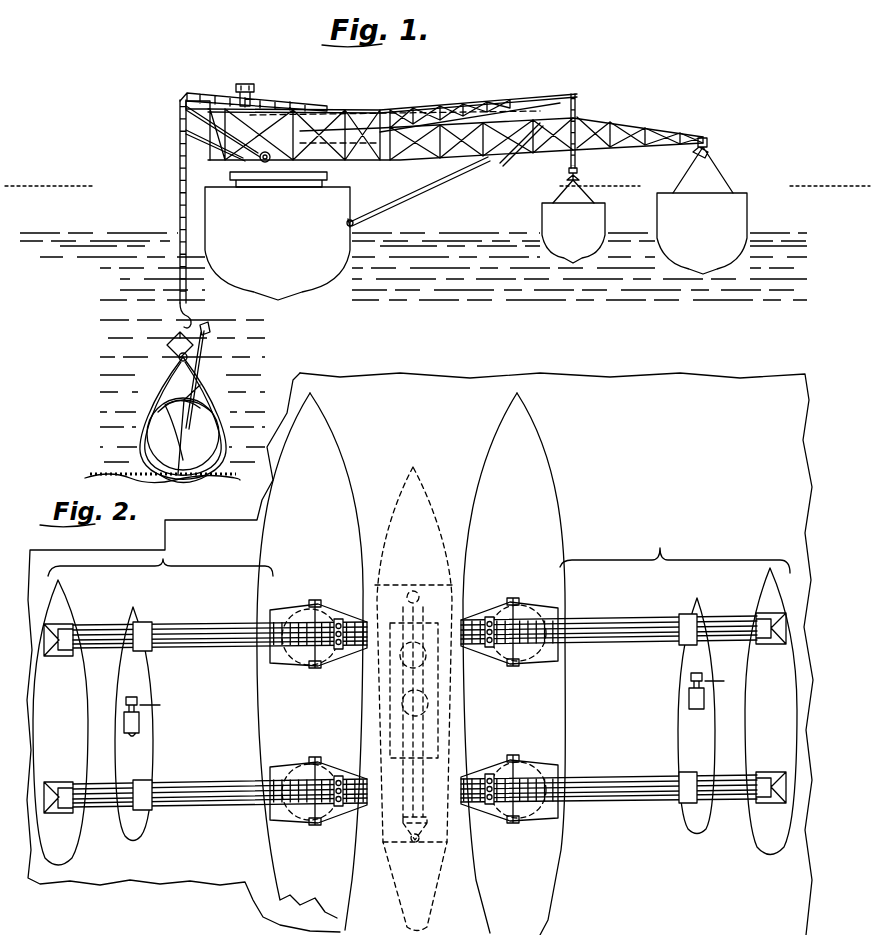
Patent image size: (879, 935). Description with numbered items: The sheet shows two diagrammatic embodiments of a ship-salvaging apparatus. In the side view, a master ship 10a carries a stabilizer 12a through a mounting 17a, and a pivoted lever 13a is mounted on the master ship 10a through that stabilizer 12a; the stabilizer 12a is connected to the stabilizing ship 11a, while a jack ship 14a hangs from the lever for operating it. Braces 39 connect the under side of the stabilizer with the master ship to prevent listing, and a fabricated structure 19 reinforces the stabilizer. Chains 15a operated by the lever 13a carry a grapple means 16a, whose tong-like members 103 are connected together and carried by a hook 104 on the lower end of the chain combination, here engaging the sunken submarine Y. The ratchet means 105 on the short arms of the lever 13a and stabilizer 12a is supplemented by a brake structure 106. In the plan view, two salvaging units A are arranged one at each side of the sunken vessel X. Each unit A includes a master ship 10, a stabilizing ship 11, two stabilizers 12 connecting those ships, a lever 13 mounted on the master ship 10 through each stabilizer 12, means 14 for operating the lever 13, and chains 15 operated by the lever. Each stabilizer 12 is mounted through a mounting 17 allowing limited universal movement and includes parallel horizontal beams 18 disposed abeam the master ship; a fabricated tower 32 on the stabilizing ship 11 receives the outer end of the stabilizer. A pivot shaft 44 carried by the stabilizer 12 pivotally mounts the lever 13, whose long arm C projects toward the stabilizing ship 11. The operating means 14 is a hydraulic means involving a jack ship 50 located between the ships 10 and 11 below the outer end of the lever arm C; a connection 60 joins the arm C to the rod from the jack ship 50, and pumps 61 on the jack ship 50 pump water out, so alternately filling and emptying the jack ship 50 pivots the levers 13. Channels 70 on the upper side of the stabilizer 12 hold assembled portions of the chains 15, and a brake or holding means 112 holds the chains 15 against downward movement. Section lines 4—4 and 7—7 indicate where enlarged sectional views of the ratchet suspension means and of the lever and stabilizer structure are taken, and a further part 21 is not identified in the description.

In FIG. 1, the brake structure 106 is at (236, 89).
In FIG. 1, the ratchet means 105 is at (173, 112).
In FIG. 1, the channels 70 is at (308, 105).
In FIG. 2, the channels 70 is at (566, 613).
In FIG. 1, the pivoted lever 13a is at (450, 107).
In FIG. 1, the stabilizer 12a is at (601, 124).
In FIG. 1, the fabricated structure 19 is at (535, 130).
In FIG. 1, the braces 39 is at (418, 192).
In FIG. 1, the mounting 17a is at (298, 186).
In FIG. 1, the master ship 10a is at (277, 243).
In FIG. 1, the jack ship 14a is at (573, 221).
In FIG. 1, the stabilizing ship 11a is at (702, 206).
In FIG. 1, the chains 15a is at (178, 283).
In FIG. 1, the hook 104 is at (193, 322).
In FIG. 1, the grapple means 16a is at (157, 401).
In FIG. 1, the tong-like members 103 is at (200, 418).
In FIG. 1, the load Y is at (163, 437).
In FIG. 2, the stabilizer 12 is at (100, 626).
In FIG. 2, the connection 60 is at (148, 626).
In FIG. 2, the hull deck edge 21 is at (277, 596).
In FIG. 2, the brake means 112 is at (338, 620).
In FIG. 2, the jack ship 50 is at (141, 677).
In FIG. 2, the stabilizing ship 11 is at (415, 716).
In FIG. 2, the pumps 61 is at (141, 715).
In FIG. 2, the long arm C is at (177, 785).
In FIG. 2, the beams 18 is at (98, 788).
In FIG. 2, the means for operating the lever 14 is at (153, 829).
In FIG. 2, the mounting 17 is at (311, 667).
In FIG. 2, the master ship 10 is at (411, 664).
In FIG. 2, the pivot shaft 44 is at (321, 776).
In FIG. 2, the chains 15 is at (378, 797).
In FIG. 2, the section line 7— 7 is at (512, 587).
In FIG. 2, the section line 4— 4 is at (462, 607).
In FIG. 2, the sunken vessel X is at (413, 513).
In FIG. 2, the salvaging unit A is at (419, 551).
In FIG. 2, the fabricated tower 32 is at (771, 646).
In FIG. 2, the lever 13 is at (642, 804).